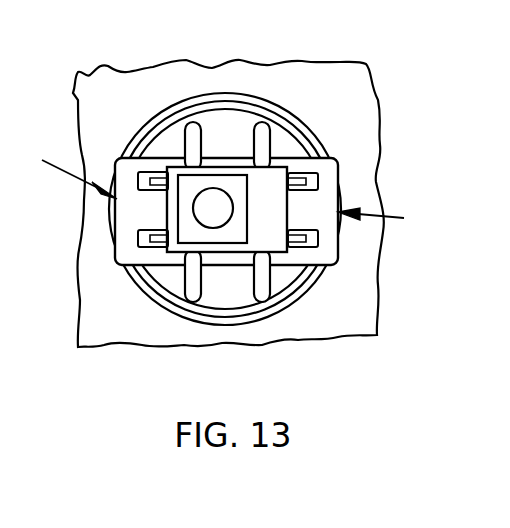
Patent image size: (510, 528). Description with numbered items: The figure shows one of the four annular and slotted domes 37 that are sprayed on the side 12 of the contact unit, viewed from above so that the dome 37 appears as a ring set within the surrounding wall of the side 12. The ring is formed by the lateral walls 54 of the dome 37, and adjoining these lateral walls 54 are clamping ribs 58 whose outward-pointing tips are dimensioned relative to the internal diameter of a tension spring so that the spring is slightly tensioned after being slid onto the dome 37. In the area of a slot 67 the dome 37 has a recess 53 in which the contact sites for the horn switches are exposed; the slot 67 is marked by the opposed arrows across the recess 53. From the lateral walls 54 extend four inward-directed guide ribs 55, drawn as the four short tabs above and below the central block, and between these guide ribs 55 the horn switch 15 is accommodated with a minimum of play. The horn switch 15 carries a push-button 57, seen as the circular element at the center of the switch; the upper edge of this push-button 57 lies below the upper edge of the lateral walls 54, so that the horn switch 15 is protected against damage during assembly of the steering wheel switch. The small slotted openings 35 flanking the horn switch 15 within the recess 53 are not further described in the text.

The side 12 is at (112, 88).
The horn switch 15 is at (270, 193).
The slots 35 is at (318, 182).
The dome 37 is at (241, 75).
The recess 53 is at (125, 214).
The lateral walls 54 is at (170, 113).
The guide ribs 55 is at (263, 132).
The push-button 57 is at (187, 237).
The clamping ribs 58 is at (145, 127).
The slot 67 is at (222, 184).